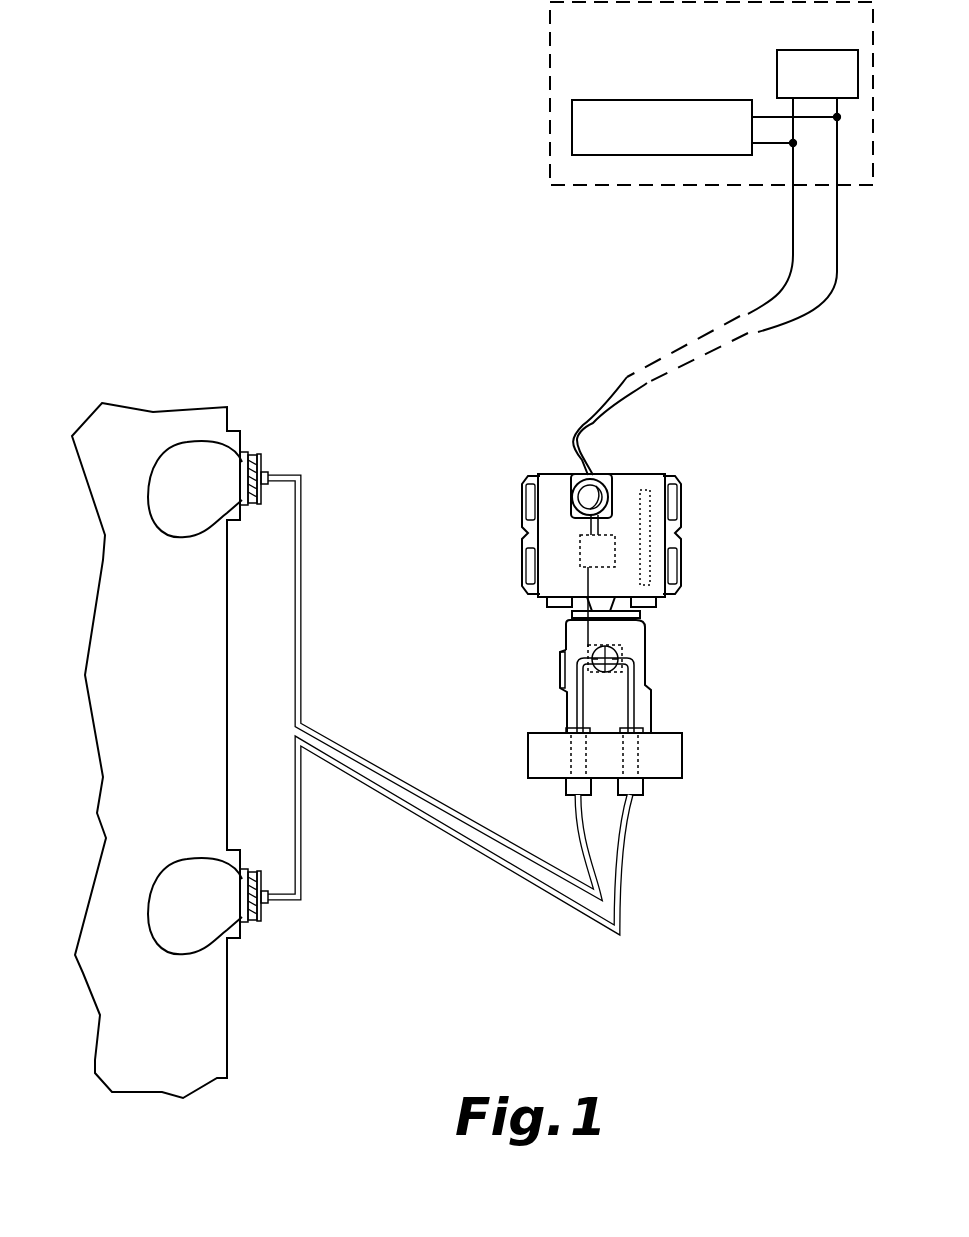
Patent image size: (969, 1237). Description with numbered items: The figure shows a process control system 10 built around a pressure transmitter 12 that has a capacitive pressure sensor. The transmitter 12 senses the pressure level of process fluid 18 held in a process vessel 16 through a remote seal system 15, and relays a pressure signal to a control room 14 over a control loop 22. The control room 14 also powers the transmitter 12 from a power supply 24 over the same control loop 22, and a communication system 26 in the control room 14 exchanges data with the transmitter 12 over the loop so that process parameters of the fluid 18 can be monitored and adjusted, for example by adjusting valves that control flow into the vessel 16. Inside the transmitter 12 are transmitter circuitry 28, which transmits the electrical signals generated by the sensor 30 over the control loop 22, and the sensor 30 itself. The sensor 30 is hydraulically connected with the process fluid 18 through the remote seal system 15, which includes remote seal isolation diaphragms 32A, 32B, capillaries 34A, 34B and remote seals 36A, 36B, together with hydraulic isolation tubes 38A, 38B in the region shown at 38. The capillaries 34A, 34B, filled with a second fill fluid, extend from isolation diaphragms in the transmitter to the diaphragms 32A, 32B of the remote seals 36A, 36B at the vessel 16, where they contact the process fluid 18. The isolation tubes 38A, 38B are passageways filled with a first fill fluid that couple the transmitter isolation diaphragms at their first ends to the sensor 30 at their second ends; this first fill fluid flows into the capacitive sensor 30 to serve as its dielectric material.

The process control system 10 is at (232, 195).
The pressure transmitter 12 is at (527, 460).
The control room 14 is at (550, 97).
The remote seal system 15 is at (449, 748).
The process vessel 16 is at (210, 1027).
The process fluid 18 is at (173, 517).
The control loop 22 is at (833, 225).
The power supply 24 is at (777, 77).
The communication system 26 is at (658, 100).
The transmitter circuitry 28 is at (590, 550).
The sensor 30 is at (615, 653).
The remote seal isolation diaphragm 32A is at (243, 478).
The remote seal isolation diaphragm 32B is at (243, 897).
The capillary 34A is at (405, 782).
The capillary 34B is at (428, 822).
The remote seal 36A is at (260, 437).
The remote seal 36B is at (280, 920).
The manifold 38 is at (657, 707).
The hydraulic isolation tube 38A is at (577, 712).
The hydraulic isolation tube 38B is at (638, 717).